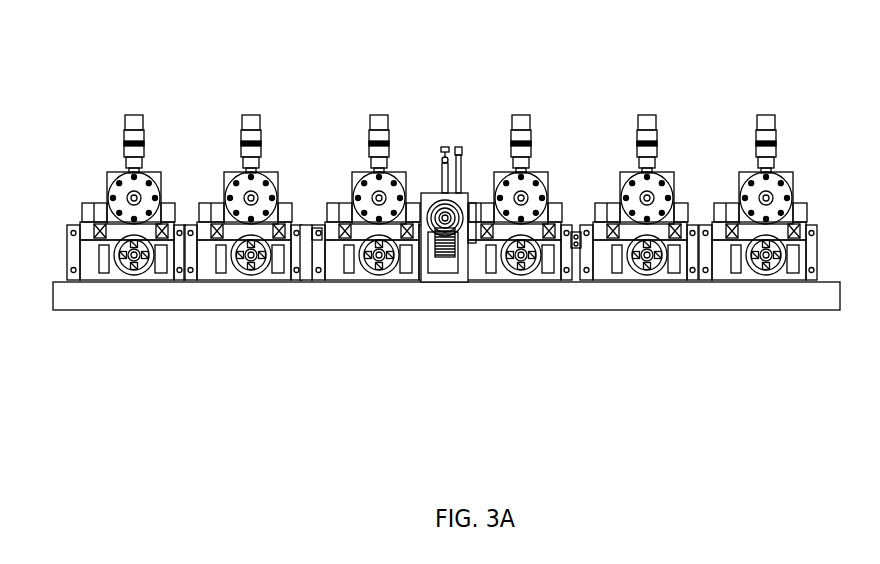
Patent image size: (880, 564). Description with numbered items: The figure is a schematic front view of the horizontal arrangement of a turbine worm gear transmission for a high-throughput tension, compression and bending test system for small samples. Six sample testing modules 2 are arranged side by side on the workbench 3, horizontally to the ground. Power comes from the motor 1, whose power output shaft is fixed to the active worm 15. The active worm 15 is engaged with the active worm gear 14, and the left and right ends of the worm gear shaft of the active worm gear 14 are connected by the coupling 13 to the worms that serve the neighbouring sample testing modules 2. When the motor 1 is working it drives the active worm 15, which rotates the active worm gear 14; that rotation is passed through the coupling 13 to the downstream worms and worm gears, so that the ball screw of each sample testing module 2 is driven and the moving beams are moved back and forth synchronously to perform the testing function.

The motor 1 is at (400, 145).
The sample testing module 2 is at (101, 144).
The workbench 3 is at (446, 159).
The coupling 13 is at (278, 144).
The active worm gear 14 is at (470, 100).
The active worm 15 is at (524, 125).